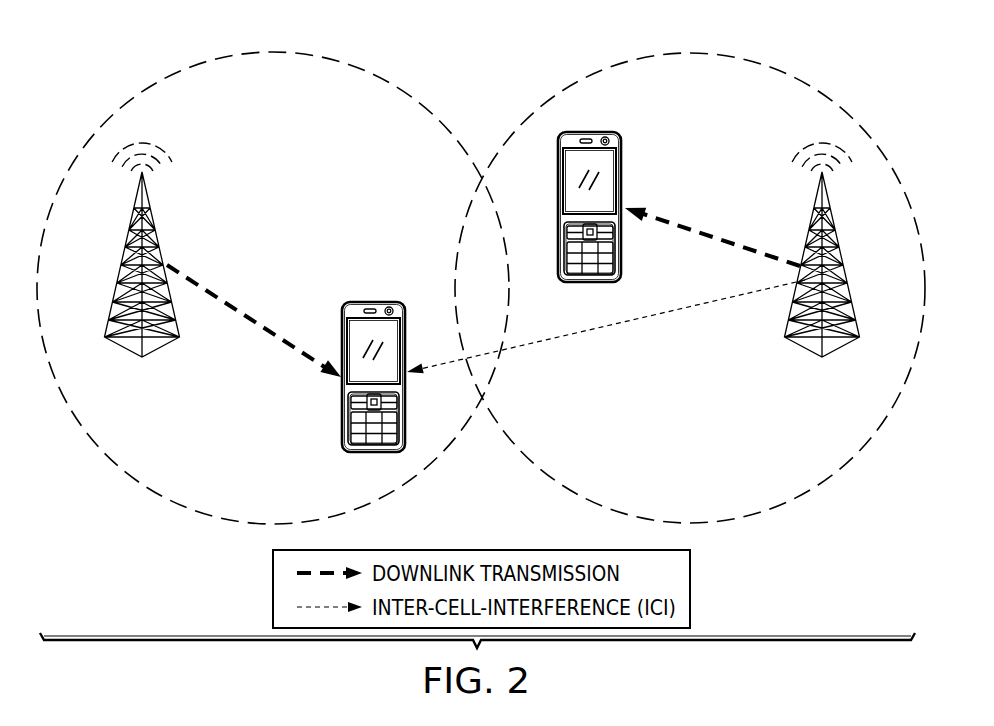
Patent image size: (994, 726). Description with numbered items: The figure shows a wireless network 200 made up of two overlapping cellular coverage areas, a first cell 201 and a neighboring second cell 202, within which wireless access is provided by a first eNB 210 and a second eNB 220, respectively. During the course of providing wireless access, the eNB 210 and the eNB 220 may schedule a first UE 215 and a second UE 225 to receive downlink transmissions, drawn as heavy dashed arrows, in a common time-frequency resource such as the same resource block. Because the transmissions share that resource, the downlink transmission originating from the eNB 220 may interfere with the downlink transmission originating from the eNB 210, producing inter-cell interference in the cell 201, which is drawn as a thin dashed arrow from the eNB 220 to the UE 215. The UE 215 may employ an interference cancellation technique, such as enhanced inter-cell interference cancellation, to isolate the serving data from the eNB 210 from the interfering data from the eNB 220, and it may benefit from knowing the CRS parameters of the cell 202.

The wireless network 200 is at (481, 288).
The cell 201 is at (293, 114).
The cell 202 is at (709, 114).
The eNB 210 is at (122, 263).
The UE 215 is at (372, 302).
The eNB 220 is at (843, 263).
The UE 225 is at (624, 175).